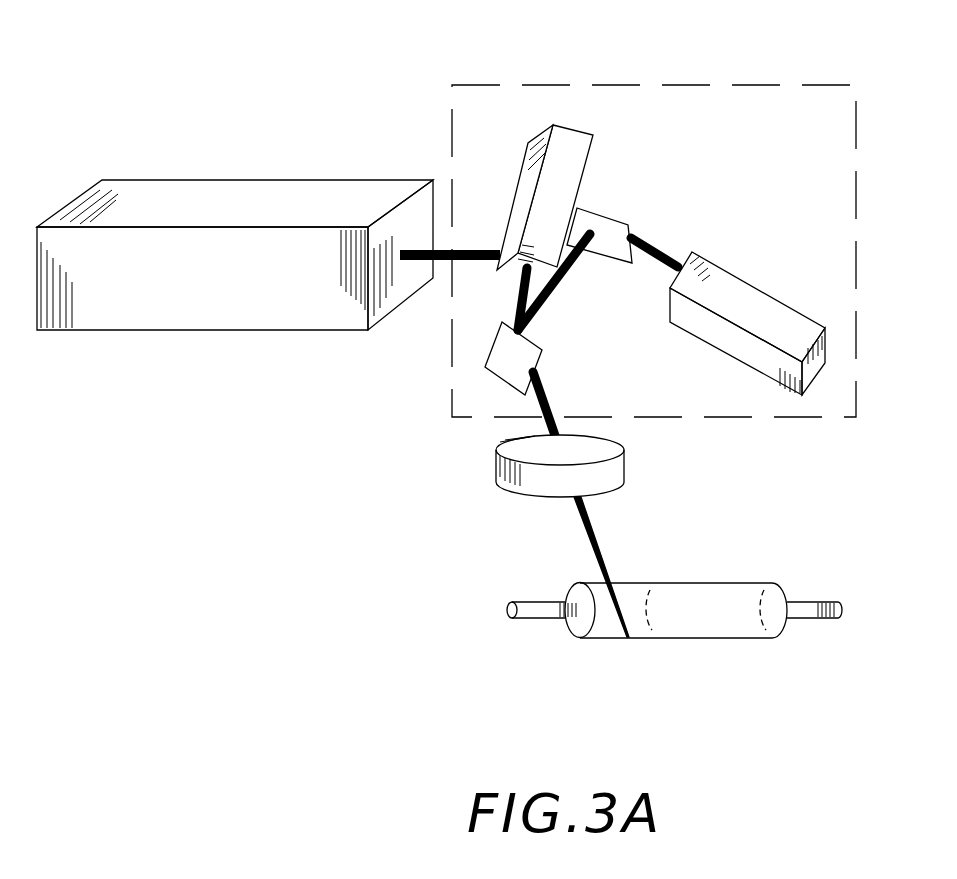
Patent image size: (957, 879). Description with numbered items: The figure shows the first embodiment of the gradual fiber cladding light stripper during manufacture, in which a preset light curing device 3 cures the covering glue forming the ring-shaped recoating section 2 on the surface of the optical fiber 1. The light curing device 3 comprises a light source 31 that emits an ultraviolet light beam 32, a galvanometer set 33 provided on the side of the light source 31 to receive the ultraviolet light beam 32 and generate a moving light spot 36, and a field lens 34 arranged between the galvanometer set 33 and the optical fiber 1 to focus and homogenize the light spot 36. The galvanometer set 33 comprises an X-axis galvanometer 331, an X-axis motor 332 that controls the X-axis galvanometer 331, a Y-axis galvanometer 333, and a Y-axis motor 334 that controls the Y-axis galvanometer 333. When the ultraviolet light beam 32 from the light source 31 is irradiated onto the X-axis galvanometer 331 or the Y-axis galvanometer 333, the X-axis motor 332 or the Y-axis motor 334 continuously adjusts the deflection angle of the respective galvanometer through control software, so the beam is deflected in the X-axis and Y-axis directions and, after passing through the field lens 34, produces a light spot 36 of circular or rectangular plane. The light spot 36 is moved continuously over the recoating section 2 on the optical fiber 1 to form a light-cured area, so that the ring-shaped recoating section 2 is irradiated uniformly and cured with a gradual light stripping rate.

The preset light curing device 3 is at (236, 120).
The light source 31 is at (172, 283).
The ultraviolet light beam 32 is at (477, 250).
The galvanometer set 33 is at (762, 85).
The X-axis galvanometer 331 is at (507, 362).
The X-axis motor 332 is at (577, 152).
The Y-axis galvanometer 333 is at (608, 230).
The Y-axis motor 334 is at (792, 320).
The field lens 34 is at (615, 470).
The light spot 36 is at (603, 563).
The recoating section 2 is at (718, 583).
The optical fiber 1 is at (808, 607).